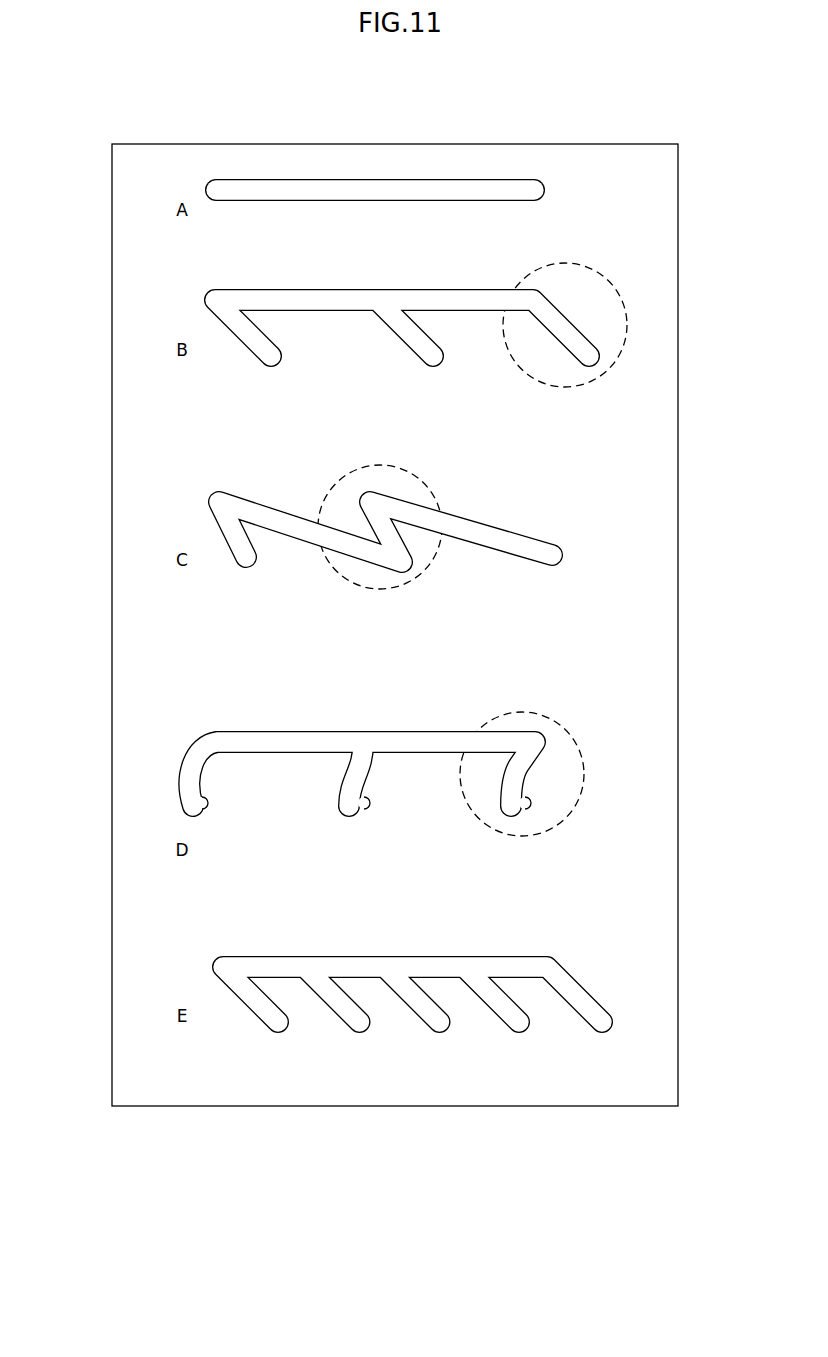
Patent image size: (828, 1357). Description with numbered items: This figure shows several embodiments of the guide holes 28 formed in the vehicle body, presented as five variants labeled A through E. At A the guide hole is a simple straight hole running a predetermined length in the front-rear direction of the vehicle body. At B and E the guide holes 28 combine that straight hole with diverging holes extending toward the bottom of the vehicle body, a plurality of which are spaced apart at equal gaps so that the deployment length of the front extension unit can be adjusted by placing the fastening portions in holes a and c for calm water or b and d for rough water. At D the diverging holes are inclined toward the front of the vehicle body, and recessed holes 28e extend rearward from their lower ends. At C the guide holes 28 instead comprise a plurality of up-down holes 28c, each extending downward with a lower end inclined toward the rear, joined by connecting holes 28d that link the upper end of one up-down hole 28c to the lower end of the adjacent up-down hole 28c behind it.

The guide hole 28 is at (371, 625).
The up-down holes 28c is at (480, 540).
The connecting holes 28d is at (369, 572).
The recessed holes 28e is at (193, 810).